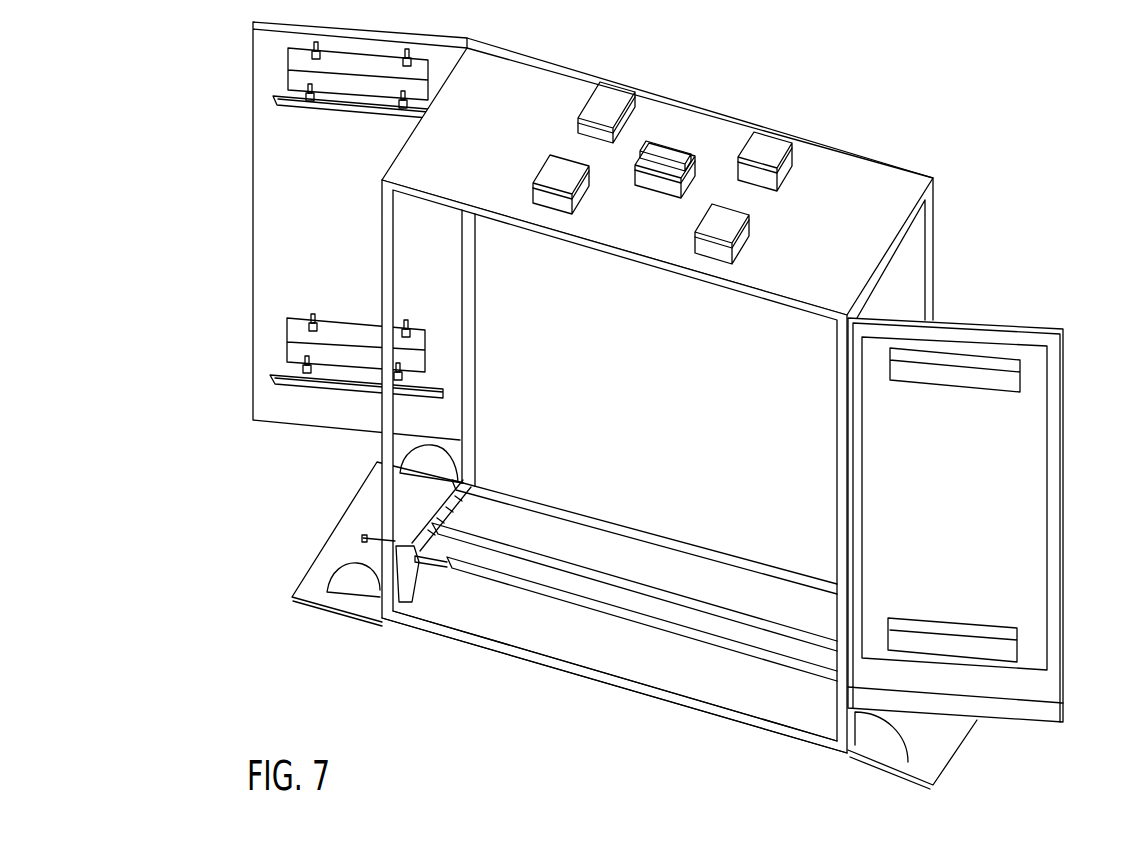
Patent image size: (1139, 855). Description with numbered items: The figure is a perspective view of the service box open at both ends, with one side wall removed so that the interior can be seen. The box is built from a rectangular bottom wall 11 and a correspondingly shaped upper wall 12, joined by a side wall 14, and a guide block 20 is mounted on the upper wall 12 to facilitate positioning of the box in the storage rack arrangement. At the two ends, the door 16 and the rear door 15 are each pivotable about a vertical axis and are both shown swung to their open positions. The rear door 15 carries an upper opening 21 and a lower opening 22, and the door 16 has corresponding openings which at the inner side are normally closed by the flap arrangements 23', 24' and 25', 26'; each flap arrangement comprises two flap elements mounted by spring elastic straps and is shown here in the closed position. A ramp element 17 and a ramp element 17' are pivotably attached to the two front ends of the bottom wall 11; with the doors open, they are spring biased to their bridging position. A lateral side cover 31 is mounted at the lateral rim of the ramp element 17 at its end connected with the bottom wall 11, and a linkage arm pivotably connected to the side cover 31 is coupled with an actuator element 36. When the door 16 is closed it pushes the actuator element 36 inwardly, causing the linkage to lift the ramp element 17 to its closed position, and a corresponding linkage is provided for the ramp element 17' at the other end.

The bottom wall 11 is at (768, 707).
The upper wall 12 is at (878, 175).
The side wall 14 is at (622, 478).
The rear door 15 is at (1018, 560).
The door 16 is at (265, 209).
The ramp element 17 is at (350, 544).
The ramp element 17' is at (930, 758).
The guide block 20 is at (690, 148).
The upper opening 21 is at (1010, 372).
The lower opening 22 is at (1010, 640).
The flap arrangement 23' is at (307, 70).
The flap arrangement 24' is at (307, 92).
The flap arrangement 25' is at (306, 342).
The flap arrangement 26' is at (315, 371).
The side cover 31 is at (340, 590).
The actuator element 36 is at (417, 573).